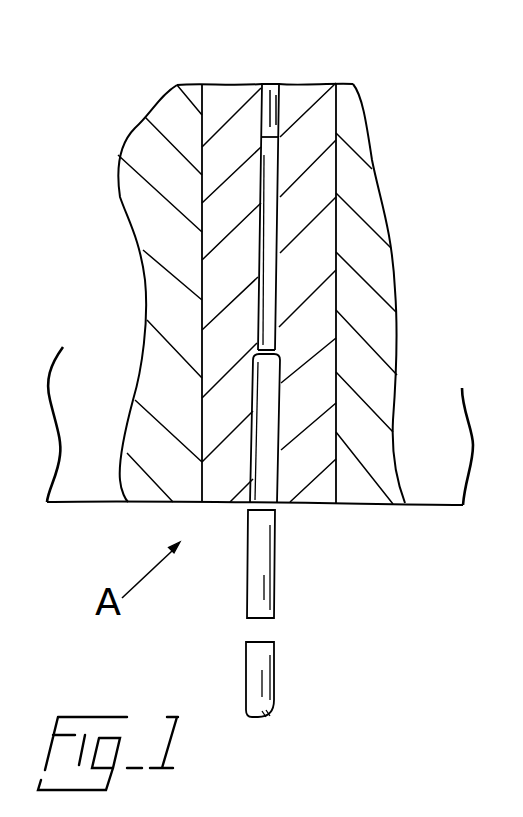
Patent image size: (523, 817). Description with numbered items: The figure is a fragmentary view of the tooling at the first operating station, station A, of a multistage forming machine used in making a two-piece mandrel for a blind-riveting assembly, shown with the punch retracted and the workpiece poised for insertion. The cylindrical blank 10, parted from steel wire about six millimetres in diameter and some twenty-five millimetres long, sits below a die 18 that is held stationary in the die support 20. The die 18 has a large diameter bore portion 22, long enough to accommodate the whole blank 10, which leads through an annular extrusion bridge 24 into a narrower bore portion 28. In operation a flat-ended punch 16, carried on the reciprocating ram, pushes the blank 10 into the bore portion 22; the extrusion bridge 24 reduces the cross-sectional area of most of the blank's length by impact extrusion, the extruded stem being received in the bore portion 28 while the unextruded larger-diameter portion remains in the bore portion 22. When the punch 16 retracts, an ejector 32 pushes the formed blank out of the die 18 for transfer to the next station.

The cylindrical blank 10 is at (262, 558).
The flat-ended punch 16 is at (255, 677).
The die 18 is at (222, 300).
The die support 20 is at (147, 138).
The large diameter bore portion 22 is at (265, 422).
The annular extrusion bridge 24 is at (280, 360).
The bore portion 28 is at (270, 233).
The ejector 32 is at (274, 84).